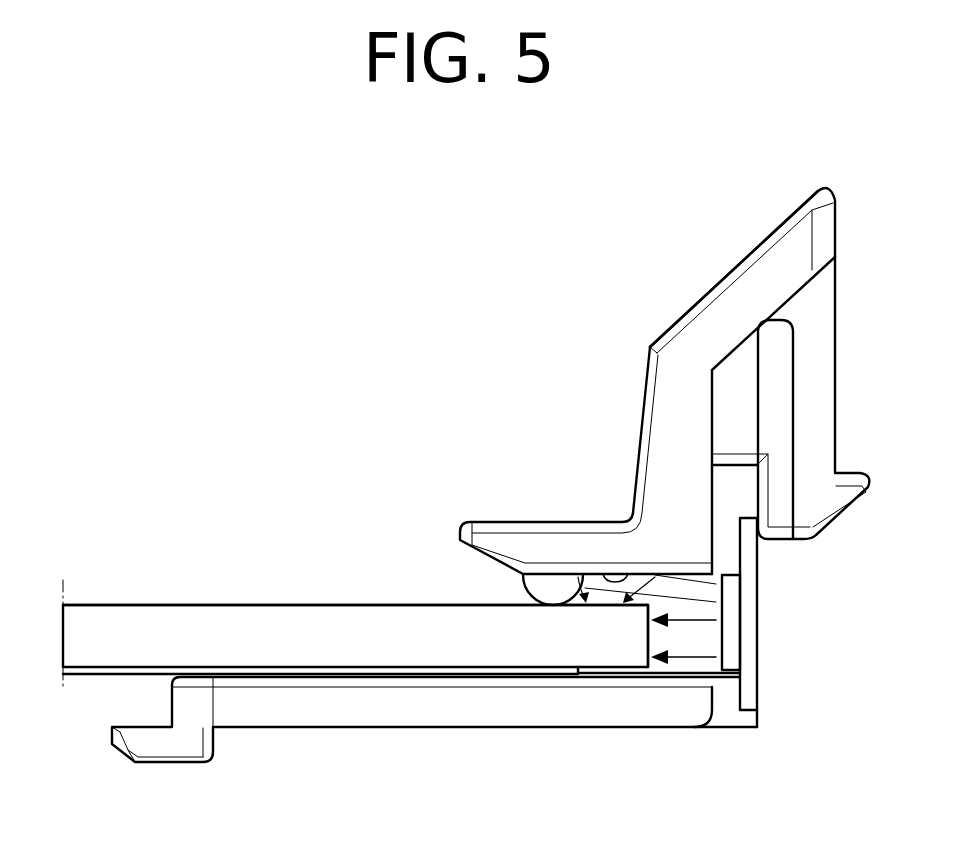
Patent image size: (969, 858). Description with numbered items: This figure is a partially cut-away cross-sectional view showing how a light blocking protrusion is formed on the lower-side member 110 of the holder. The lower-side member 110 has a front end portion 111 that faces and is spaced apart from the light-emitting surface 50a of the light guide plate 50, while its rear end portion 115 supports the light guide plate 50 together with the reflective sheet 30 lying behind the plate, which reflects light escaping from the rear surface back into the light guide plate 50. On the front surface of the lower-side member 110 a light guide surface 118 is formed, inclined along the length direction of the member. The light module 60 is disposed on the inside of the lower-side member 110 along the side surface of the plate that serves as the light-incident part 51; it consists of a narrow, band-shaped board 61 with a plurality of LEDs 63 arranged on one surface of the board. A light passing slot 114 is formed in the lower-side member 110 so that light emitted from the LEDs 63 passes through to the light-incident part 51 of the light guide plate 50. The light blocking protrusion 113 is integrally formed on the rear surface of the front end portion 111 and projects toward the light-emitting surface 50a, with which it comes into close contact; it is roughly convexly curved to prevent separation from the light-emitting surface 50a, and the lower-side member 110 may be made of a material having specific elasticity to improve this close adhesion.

The lower-side member 110 is at (718, 222).
The light guide surface 118 is at (688, 310).
The front end portion 111 is at (507, 538).
The light passing slot 114 is at (605, 573).
The light blocking protrusion 113 is at (540, 590).
The light guide plate 50 is at (288, 597).
The light-emitting surface 50a is at (162, 603).
The light-incident part 51 is at (648, 640).
The reflective sheet 30 is at (288, 676).
The rear end portion 115 is at (478, 715).
The light module 60 is at (816, 614).
The board 61 is at (747, 645).
The LEDs 63 is at (728, 595).